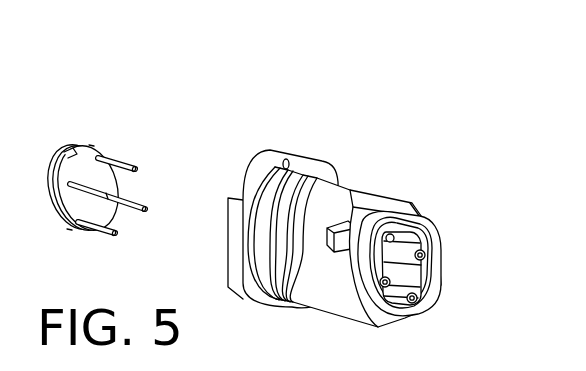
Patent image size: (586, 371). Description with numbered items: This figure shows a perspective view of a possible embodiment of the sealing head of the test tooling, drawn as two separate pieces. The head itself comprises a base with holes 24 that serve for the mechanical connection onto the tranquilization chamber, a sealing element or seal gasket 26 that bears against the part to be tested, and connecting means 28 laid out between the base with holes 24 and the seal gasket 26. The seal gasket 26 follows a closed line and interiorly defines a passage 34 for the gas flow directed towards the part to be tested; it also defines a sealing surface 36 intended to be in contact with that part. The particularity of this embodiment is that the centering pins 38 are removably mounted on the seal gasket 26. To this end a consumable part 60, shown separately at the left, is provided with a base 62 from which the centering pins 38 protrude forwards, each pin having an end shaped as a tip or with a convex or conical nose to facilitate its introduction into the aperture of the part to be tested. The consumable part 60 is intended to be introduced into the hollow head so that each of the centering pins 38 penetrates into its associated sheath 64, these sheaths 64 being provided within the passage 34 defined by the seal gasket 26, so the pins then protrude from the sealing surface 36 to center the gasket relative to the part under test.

The consumable part 60 is at (104, 146).
The base 62 is at (70, 149).
The centering pins 38 is at (132, 200).
The base with holes 24 is at (310, 160).
The connecting means 28 is at (346, 178).
The sealing element/gasket 26 is at (420, 208).
The sealing surface 36 is at (430, 253).
The passage 34 is at (407, 275).
The sheaths 64 is at (421, 255).